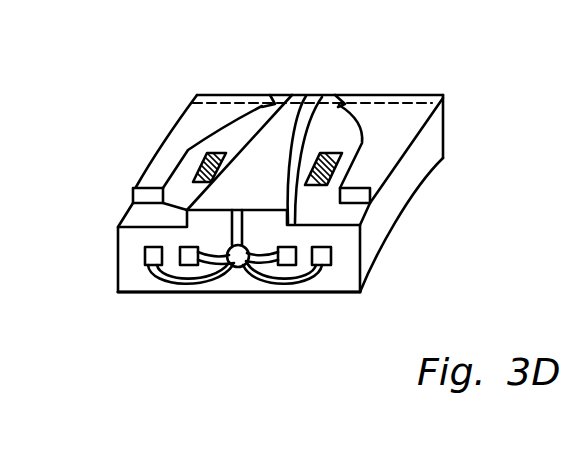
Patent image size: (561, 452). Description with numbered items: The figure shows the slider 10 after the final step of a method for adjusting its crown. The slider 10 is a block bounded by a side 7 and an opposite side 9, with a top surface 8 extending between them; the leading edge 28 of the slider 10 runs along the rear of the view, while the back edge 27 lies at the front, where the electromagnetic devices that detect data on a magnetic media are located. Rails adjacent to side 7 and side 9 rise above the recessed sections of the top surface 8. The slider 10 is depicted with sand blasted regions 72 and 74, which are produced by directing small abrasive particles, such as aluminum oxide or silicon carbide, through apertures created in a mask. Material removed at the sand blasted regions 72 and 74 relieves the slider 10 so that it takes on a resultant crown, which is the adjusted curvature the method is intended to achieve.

The side 7 is at (118, 258).
The top surface 8 is at (153, 215).
The side 9 is at (388, 250).
The slider 10 is at (338, 278).
The back edge 27 is at (128, 210).
The leading edge 28 is at (386, 95).
The sand blasted region 72 is at (218, 156).
The sand blasted region 74 is at (335, 152).